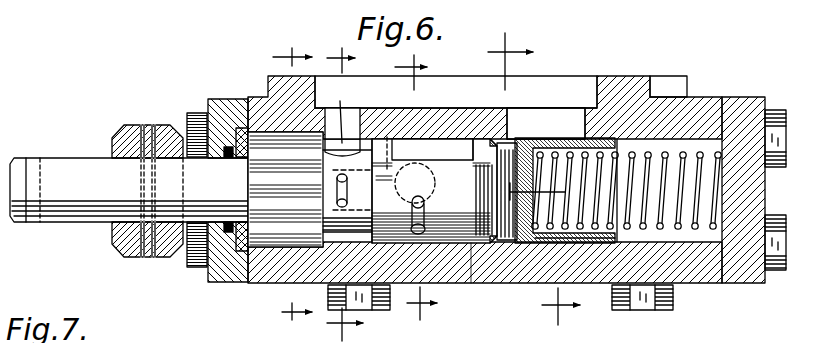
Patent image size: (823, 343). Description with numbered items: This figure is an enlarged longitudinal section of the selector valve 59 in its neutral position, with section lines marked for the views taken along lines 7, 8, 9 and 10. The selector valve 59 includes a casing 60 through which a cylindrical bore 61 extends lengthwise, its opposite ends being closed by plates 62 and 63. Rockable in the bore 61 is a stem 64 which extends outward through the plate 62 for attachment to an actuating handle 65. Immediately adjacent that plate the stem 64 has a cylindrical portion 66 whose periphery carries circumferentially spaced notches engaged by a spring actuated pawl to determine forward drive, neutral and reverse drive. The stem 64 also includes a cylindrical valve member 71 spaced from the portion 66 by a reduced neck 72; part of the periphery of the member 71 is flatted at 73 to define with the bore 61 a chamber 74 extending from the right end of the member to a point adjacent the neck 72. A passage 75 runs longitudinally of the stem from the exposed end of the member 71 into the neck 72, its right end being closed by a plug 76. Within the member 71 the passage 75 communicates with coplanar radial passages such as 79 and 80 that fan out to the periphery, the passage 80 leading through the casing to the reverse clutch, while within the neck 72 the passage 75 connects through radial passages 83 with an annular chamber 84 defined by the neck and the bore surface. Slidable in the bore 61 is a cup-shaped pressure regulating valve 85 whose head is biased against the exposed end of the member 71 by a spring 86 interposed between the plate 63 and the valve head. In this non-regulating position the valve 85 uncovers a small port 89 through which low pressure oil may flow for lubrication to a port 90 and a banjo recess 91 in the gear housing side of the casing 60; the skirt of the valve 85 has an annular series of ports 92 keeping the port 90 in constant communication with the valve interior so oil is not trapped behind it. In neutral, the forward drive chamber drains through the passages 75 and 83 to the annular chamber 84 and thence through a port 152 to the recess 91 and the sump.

The selector valve 59 is at (244, 58).
The casing 60 is at (613, 76).
The cylindrical bore 61 is at (472, 243).
The plate 62 is at (222, 99).
The plate 63 is at (737, 97).
The stem 64 is at (80, 225).
The actuating handle 65 is at (122, 250).
The cylindrical portion 66 is at (292, 236).
The cylindrical valve member 71 is at (445, 237).
The reduced neck 72 is at (364, 145).
The flat 73 is at (474, 150).
The chamber 74 is at (432, 149).
The passage 75 is at (396, 139).
The plug 76 is at (484, 245).
The radial passage 79 is at (424, 201).
The radial passage 80 is at (421, 236).
The radial passages 83 is at (347, 178).
The annular chamber 84 is at (342, 132).
The pressure regulating valve 85 is at (614, 239).
The spring 86 is at (692, 230).
The port 89 is at (546, 123).
The port 90 is at (574, 132).
The banjo recess 91 is at (567, 99).
The ports 92 is at (545, 243).
The port 152 is at (333, 115).
The section line 7- 7 is at (416, 189).
The section line 8- 8 is at (292, 190).
The section line 9- 9 is at (534, 179).
The section line 10- 10 is at (351, 195).